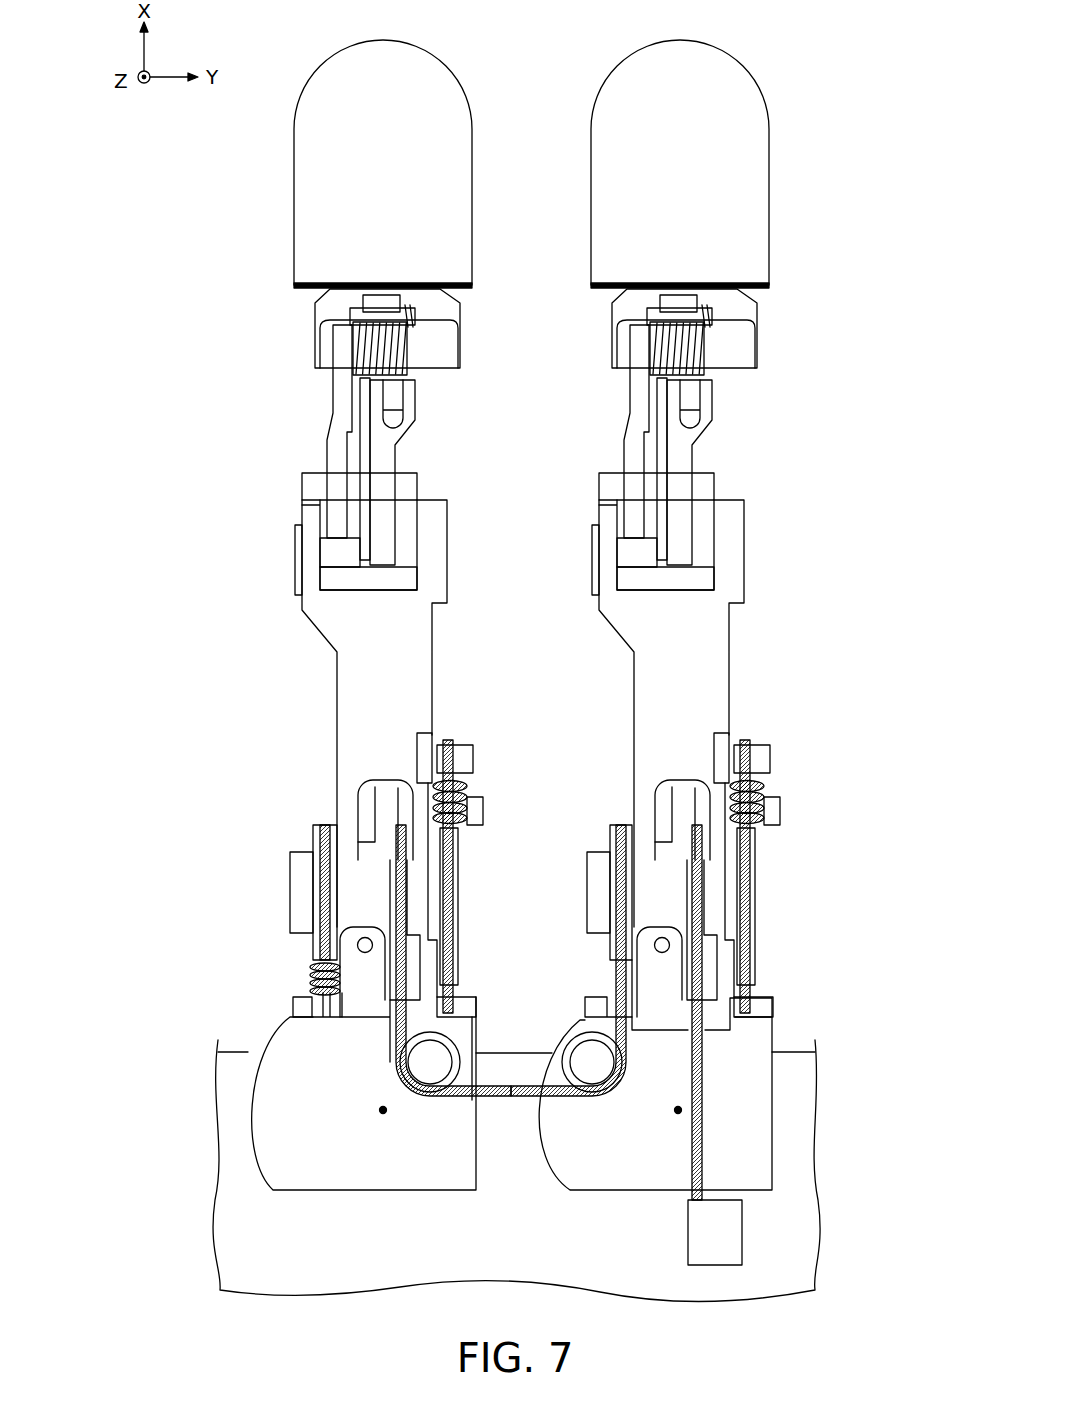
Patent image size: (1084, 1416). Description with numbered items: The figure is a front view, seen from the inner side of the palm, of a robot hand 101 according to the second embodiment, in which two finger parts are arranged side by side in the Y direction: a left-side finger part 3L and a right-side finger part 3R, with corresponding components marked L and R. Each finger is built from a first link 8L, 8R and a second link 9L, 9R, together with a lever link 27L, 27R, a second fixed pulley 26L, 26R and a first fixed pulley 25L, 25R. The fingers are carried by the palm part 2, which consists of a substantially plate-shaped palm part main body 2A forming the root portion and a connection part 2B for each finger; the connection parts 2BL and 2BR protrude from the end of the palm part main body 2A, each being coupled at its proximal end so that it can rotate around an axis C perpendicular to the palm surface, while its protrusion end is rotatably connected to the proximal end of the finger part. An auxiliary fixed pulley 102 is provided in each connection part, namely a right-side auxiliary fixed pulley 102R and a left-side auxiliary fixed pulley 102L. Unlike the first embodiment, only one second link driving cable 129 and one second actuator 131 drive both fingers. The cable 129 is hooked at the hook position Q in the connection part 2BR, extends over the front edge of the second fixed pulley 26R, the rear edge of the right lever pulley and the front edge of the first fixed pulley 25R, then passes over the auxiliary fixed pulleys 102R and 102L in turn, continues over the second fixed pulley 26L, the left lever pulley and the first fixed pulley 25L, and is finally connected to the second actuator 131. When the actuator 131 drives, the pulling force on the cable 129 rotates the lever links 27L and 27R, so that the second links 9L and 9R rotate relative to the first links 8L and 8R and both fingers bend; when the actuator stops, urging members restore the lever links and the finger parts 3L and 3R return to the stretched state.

The robot hand 101 is at (782, 38).
The right-side finger part 3R is at (290, 198).
The left-side finger part 3L is at (587, 198).
The second link of the right-side finger part 9R is at (333, 441).
The second link of the left-side finger part 9L is at (630, 441).
The first link of the right-side finger part 8R is at (347, 666).
The first link of the left-side finger part 8L is at (644, 666).
The lever link of the right-side finger part 27R is at (383, 796).
The lever link of the left-side finger part 27L is at (680, 796).
The second fixed pulley of the right-side finger part 26R is at (322, 833).
The second fixed pulley of the left-side finger part 26L is at (619, 833).
The first fixed pulley of the right-side finger part 25R is at (407, 917).
The first fixed pulley of the left-side finger part 25L is at (705, 917).
The second link driving cable 129 is at (323, 893).
The hook position Q is at (298, 972).
The palm part 2 is at (110, 1110).
The connection part 2B is at (520, 1083).
The connection part of the right-side finger part 2BR is at (318, 1117).
The connection part of the left-side finger part 2BL is at (762, 1050).
The palm part main body 2A is at (267, 1213).
The auxiliary fixed pulley 102 is at (524, 1137).
The right-side auxiliary fixed pulley 102R is at (430, 1070).
The left-side auxiliary fixed pulley 102L is at (592, 1070).
The second actuator 131 is at (730, 1238).
The axis C is at (383, 1110).